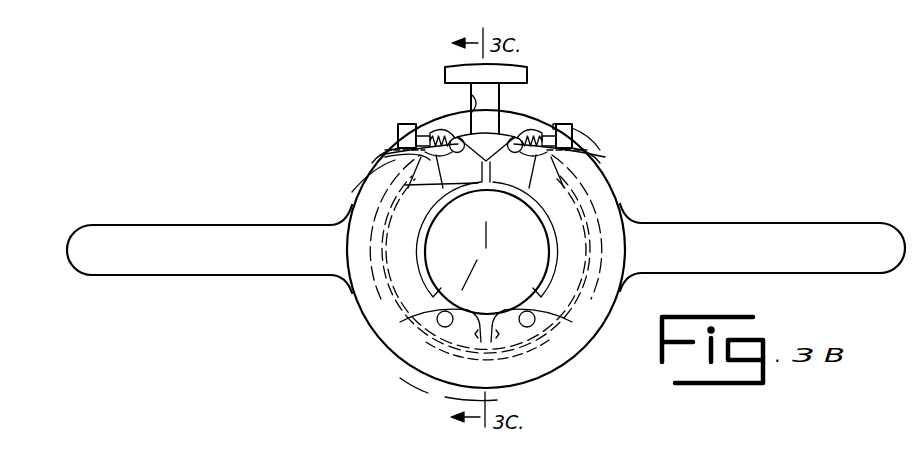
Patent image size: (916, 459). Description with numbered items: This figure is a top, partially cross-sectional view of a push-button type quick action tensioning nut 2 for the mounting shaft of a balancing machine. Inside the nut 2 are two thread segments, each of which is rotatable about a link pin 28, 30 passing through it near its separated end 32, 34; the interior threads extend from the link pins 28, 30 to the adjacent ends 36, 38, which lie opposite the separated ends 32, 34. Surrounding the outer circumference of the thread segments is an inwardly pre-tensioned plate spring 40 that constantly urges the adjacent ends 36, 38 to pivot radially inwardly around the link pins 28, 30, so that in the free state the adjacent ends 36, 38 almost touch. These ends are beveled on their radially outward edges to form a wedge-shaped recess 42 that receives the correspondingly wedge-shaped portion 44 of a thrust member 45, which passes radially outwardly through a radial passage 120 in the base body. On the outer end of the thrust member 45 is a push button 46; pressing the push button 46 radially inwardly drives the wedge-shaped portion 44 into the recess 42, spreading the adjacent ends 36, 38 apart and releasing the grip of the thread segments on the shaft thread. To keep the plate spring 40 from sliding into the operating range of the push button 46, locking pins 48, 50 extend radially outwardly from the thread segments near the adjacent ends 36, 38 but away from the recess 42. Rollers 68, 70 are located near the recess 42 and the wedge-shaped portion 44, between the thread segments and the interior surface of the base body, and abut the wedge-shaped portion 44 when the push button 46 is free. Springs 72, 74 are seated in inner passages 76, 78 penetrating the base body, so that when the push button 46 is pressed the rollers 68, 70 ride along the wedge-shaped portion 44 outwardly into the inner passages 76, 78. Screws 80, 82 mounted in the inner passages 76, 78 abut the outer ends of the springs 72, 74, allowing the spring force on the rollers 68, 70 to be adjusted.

The quick action tensioning nut 2 is at (355, 70).
The link pin 28 is at (400, 322).
The link pin 30 is at (535, 325).
The separated end 32 is at (424, 357).
The separated end 34 is at (522, 384).
The adjacent end 36 is at (405, 188).
The adjacent end 38 is at (582, 192).
The plate spring 40 is at (583, 332).
The wedge-shaped recess 42 is at (562, 175).
The wedge-shaped portion 44 is at (500, 100).
The thrust member 45 is at (520, 136).
The push button 46 is at (453, 67).
The locking pin 48 is at (600, 163).
The locking pin 50 is at (400, 157).
The roller 68 is at (452, 140).
The roller 70 is at (540, 130).
The spring 72 is at (397, 150).
The spring 74 is at (586, 155).
The inner passage 76 is at (442, 128).
The inner passage 78 is at (566, 122).
The screw 80 is at (398, 129).
The screw 82 is at (574, 122).
The radial passage 120 is at (472, 104).